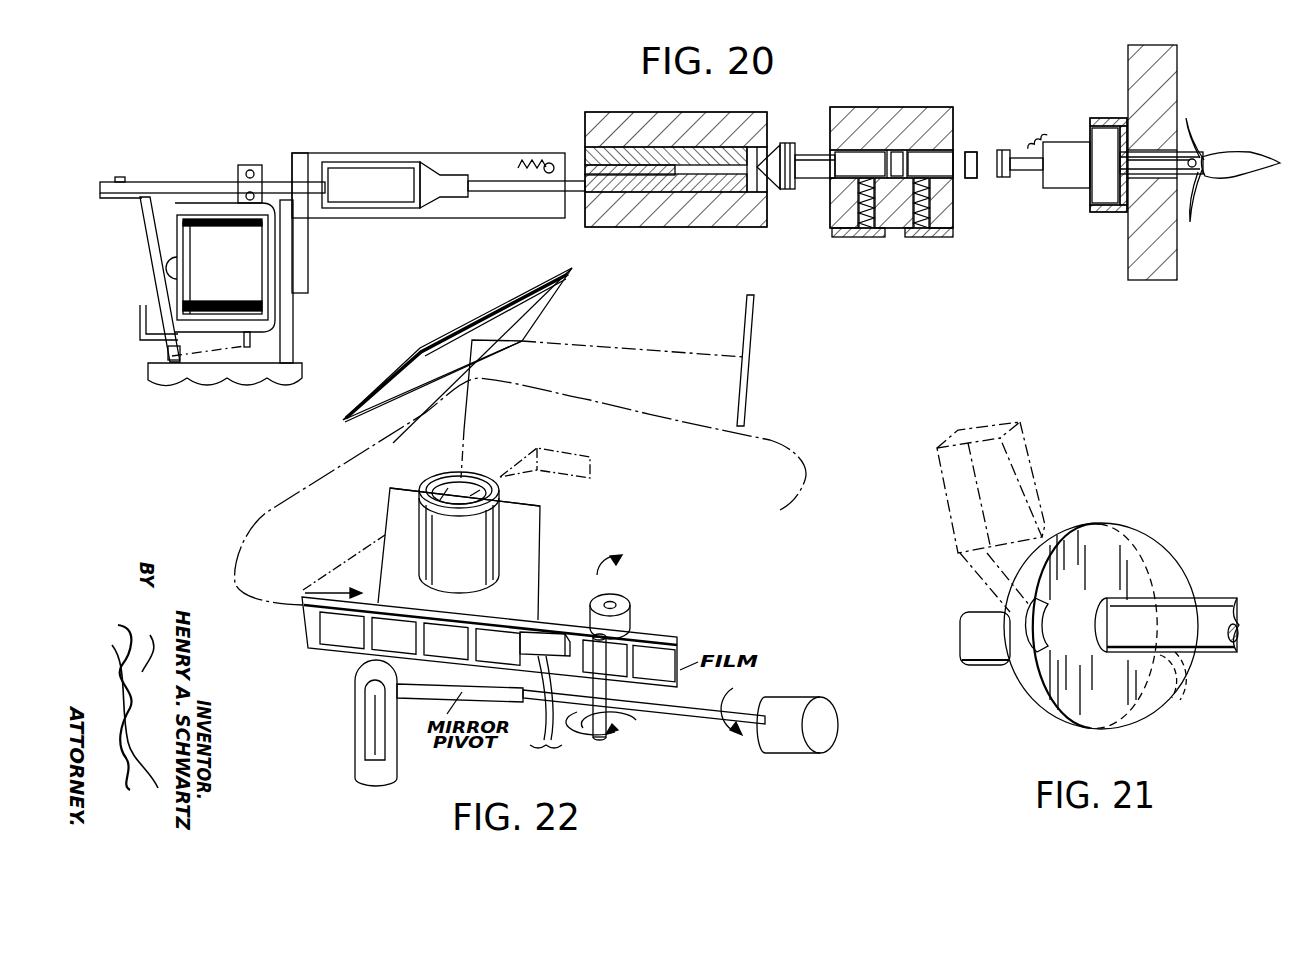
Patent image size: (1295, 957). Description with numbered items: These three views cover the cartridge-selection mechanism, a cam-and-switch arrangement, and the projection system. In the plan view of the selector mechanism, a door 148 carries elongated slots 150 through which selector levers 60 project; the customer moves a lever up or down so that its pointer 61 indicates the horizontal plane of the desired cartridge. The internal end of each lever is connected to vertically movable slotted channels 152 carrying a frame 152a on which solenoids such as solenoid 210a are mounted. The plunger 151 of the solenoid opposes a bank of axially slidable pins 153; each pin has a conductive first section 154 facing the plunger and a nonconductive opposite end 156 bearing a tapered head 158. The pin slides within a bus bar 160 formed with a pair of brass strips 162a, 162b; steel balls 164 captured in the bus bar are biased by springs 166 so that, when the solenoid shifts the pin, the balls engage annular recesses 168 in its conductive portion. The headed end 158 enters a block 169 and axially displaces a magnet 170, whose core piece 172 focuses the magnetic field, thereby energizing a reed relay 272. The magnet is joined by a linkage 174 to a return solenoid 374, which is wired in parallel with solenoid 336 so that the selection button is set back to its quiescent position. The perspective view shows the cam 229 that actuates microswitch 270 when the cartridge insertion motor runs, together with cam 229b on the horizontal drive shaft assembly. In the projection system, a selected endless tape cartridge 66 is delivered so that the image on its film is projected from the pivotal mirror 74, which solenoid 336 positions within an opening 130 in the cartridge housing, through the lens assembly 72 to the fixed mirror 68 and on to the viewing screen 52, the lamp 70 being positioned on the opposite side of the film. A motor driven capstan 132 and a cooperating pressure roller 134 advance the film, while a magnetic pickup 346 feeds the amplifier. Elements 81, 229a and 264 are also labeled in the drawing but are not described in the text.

In FIG. 20, the return solenoid 374 is at (233, 273).
In FIG. 20, the linkage 174 is at (444, 170).
In FIG. 20, the reed relay 272 is at (551, 163).
In FIG. 20, the core piece 172 is at (630, 166).
In FIG. 20, the magnet 170 is at (684, 152).
In FIG. 20, the block 169 is at (680, 220).
In FIG. 20, the opposite end of the pin 156 is at (806, 155).
In FIG. 20, the tapered head 158 is at (772, 190).
In FIG. 20, the annular recesses 168 is at (896, 150).
In FIG. 20, the bus bar 160 is at (925, 112).
In FIG. 20, the steel balls 164 is at (895, 164).
In FIG. 20, the springs 166 is at (850, 233).
In FIG. 20, the brass strip 162a is at (870, 237).
In FIG. 20, the brass strip 162b is at (948, 230).
In FIG. 20, the axially slidable pin 153 is at (978, 148).
In FIG. 20, the first section of the pin 154 is at (970, 180).
In FIG. 20, the plunger 151 is at (1025, 172).
In FIG. 20, the solenoid 210a is at (1072, 142).
In FIG. 20, the frame 152a is at (1100, 190).
In FIG. 20, the slotted channels 152 is at (1108, 212).
In FIG. 20, the door 148 is at (1163, 90).
In FIG. 20, the shaft 81 is at (1170, 158).
In FIG. 20, the elongated slots 150 is at (1184, 154).
In FIG. 20, the pointers 61 is at (1201, 177).
In FIG. 20, the selector levers 60 is at (1228, 176).
In FIG. 22, the fixed mirror 68 is at (566, 284).
In FIG. 22, the viewing screen 52 is at (752, 343).
In FIG. 22, the endless tape cartridge 66 is at (780, 460).
In FIG. 22, the opening 130 is at (420, 483).
In FIG. 22, the lens assembly 72 is at (410, 530).
In FIG. 22, the pivotal mirror 74 is at (398, 543).
In FIG. 22, the magnetic pickup 346 is at (548, 628).
In FIG. 22, the pressure roller 134 is at (636, 598).
In FIG. 22, the capstan 132 is at (638, 710).
In FIG. 22, the lamp 70 is at (357, 710).
In FIG. 22, the solenoid 336 is at (818, 714).
In FIG. 21, the cam 229 is at (1175, 702).
In FIG. 21, the notch 229a is at (1018, 660).
In FIG. 21, the cam 229b is at (1188, 674).
In FIG. 21, the block 264 is at (955, 432).
In FIG. 21, the microswitch 270 is at (1030, 458).